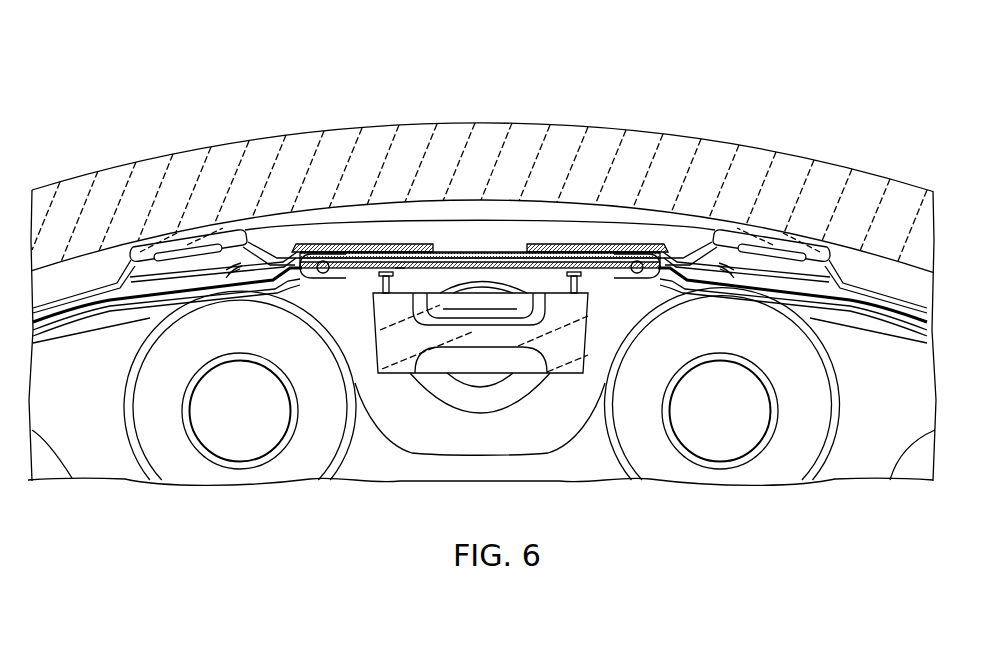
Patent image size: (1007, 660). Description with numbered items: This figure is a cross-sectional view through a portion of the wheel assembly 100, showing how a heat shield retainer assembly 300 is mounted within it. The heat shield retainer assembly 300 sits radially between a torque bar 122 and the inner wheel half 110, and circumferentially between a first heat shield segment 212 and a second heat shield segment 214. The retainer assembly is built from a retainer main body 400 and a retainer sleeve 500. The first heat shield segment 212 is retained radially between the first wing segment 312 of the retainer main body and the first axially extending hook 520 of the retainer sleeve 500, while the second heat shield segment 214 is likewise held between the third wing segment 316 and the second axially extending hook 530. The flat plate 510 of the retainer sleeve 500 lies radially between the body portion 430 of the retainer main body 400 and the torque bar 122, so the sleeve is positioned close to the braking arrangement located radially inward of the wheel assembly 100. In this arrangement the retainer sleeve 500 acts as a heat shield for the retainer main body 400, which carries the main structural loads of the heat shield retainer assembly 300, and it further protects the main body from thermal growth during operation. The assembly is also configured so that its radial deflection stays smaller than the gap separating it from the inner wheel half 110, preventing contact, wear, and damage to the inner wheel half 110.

The wheel assembly 100 is at (275, 74).
The inner wheel half 110 is at (423, 173).
The torque bar 122 is at (540, 335).
The first heat shield segment 212 is at (690, 287).
The second heat shield segment 214 is at (190, 295).
The heat shield retainer assembly 300 is at (480, 305).
The first wing segment 312 is at (352, 246).
The third wing segment 316 is at (615, 250).
The retainer main body 400 is at (450, 280).
The body portion 430 is at (450, 280).
The retainer sleeve 500 is at (500, 272).
The flat plate 510 is at (400, 266).
The first axially extending hook 520 is at (327, 257).
The second axially extending hook 530 is at (632, 257).